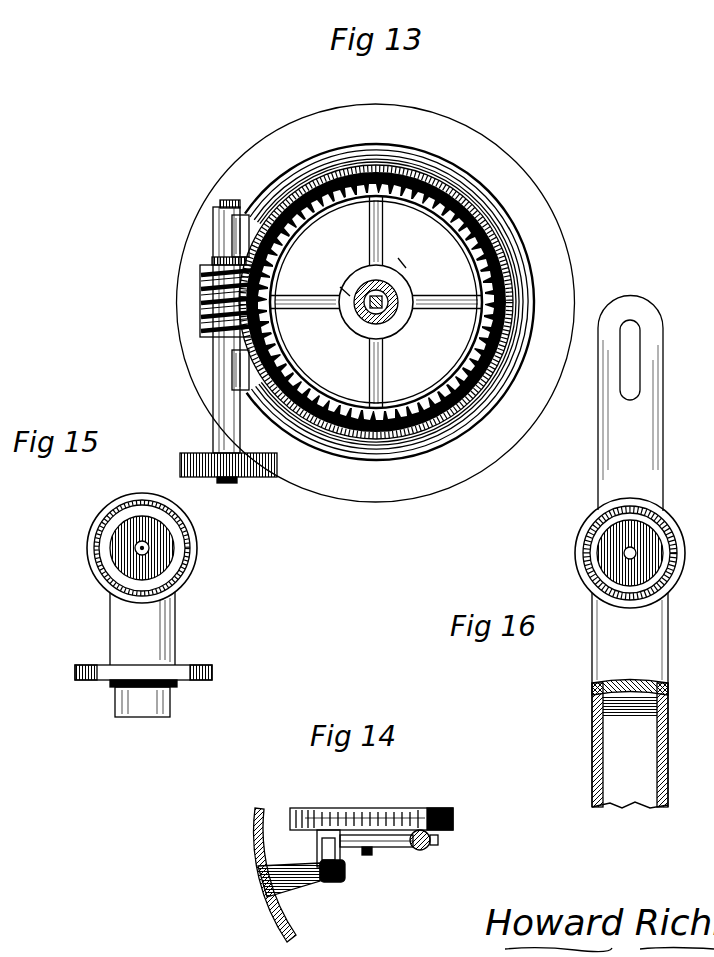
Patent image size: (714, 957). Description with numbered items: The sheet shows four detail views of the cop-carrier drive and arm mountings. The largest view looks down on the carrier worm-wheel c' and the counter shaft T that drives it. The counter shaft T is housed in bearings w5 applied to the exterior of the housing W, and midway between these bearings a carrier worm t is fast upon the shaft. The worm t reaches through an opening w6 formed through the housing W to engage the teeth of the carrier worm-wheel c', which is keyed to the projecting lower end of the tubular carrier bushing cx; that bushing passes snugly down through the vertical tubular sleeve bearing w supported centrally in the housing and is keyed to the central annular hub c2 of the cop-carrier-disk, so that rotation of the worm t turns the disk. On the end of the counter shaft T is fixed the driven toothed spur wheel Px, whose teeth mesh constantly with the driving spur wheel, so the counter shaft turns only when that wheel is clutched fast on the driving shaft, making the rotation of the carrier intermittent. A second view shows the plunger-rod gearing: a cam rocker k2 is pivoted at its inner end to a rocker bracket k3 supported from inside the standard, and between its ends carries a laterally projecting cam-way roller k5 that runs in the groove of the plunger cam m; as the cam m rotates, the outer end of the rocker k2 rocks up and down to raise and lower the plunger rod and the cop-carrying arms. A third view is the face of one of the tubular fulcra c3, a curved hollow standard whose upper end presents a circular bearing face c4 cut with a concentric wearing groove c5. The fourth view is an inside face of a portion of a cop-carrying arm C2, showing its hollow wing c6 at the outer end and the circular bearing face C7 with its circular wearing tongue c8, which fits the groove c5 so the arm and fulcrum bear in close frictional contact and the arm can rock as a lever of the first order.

In FIG. 13, the housing W is at (475, 192).
In FIG. 14, the housing W is at (252, 833).
In FIG. 13, the tubular sleeve bearing w is at (412, 293).
In FIG. 13, the carrier worm-wheel c' is at (415, 262).
In FIG. 13, the roller / key k is at (340, 287).
In FIG. 14, the roller / key k is at (420, 850).
In FIG. 13, the carrier bushing cx is at (360, 327).
In FIG. 13, the counter shaft T is at (222, 203).
In FIG. 13, the bearings w5 is at (223, 235).
In FIG. 13, the opening w6 is at (216, 260).
In FIG. 13, the carrier worm t is at (200, 300).
In FIG. 13, the driven toothed spur wheel Px is at (180, 467).
In FIG. 15, the circular bearing face c4 is at (183, 517).
In FIG. 15, the circular concentric wearing groove c5 is at (115, 580).
In FIG. 15, the tubular fulcrum c3 is at (175, 617).
In FIG. 16, the cop carrying arm C2 is at (630, 552).
In FIG. 16, the wing c6 is at (630, 360).
In FIG. 16, the circular bearing face C7 is at (580, 538).
In FIG. 16, the circular wearing tongue c8 is at (595, 563).
In FIG. 16, the central annular hub c2 is at (630, 719).
In FIG. 14, the cam-way roller k5 is at (378, 833).
In FIG. 14, the plunger cam m is at (453, 818).
In FIG. 14, the cam rocker k2 is at (395, 843).
In FIG. 14, the rocker bracket k3 is at (302, 880).